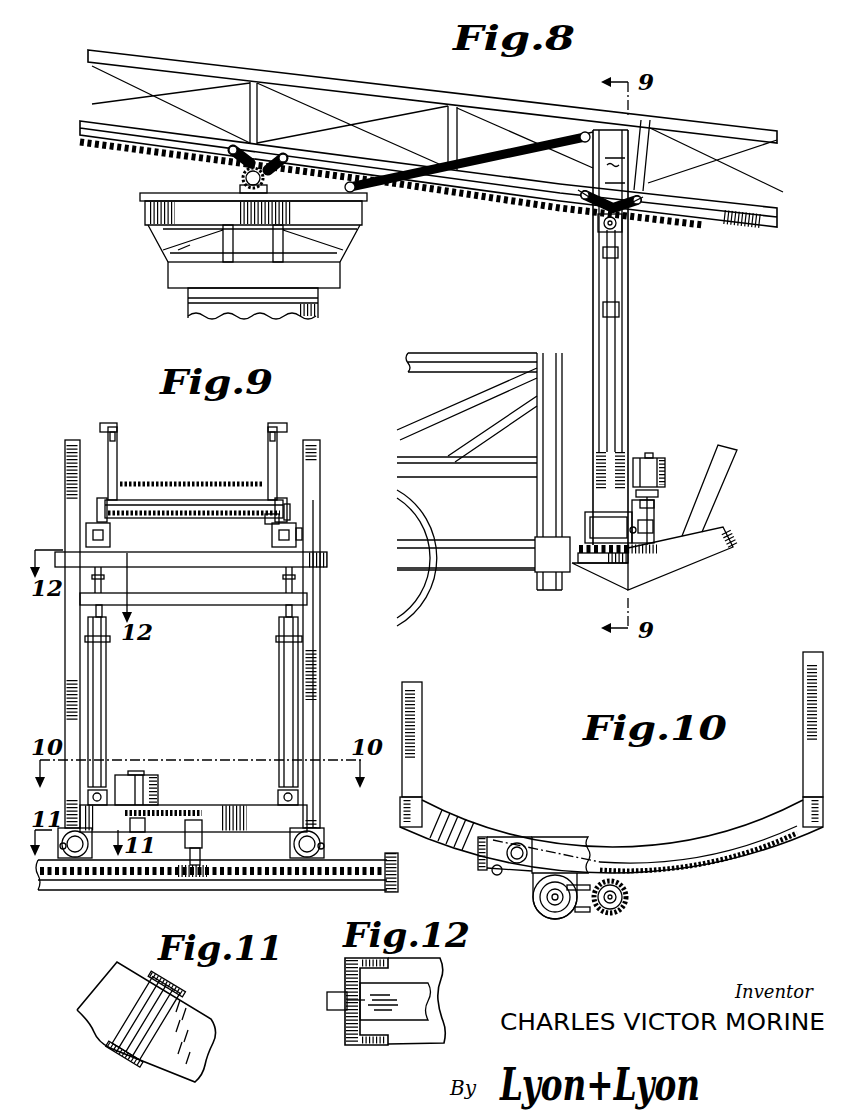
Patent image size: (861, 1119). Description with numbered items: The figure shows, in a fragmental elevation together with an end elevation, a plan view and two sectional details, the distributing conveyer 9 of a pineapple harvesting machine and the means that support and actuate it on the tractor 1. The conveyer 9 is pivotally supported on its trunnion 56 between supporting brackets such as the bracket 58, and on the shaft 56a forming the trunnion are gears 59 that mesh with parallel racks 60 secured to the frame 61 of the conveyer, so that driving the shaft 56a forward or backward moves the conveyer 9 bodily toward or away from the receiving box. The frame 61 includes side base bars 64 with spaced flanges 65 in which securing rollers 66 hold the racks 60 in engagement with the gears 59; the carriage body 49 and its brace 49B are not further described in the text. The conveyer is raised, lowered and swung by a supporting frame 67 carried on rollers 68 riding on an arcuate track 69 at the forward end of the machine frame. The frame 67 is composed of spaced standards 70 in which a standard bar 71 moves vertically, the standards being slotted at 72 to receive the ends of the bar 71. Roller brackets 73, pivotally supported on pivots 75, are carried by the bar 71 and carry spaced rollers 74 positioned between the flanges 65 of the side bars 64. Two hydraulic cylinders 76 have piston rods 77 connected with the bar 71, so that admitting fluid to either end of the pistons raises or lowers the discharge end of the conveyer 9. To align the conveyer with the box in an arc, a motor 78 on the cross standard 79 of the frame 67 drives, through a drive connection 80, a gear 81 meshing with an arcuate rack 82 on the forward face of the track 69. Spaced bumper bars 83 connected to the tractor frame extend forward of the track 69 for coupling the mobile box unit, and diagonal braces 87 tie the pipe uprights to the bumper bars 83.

In FIG. 8, the tractor 1 is at (318, 310).
In FIG. 8, the distributing conveyer 9 is at (538, 104).
In FIG. 9, the distributing conveyer 9 is at (185, 482).
In FIG. 8, the carriage body 49 is at (340, 236).
In FIG. 8, the carriage frame brace 49B is at (178, 250).
In FIG. 8, the trunnion 56 is at (240, 182).
In FIG. 8, the shaft 56a is at (267, 183).
In FIG. 8, the supporting bracket 58 is at (251, 150).
In FIG. 8, the gears 59 is at (257, 194).
In FIG. 8, the racks 60 is at (110, 148).
In FIG. 8, the frame 61 is at (420, 91).
In FIG. 9, the frame 61 is at (118, 449).
In FIG. 8, the side base bars 64 is at (758, 222).
In FIG. 9, the side base bars 64 is at (257, 500).
In FIG. 8, the flanges 65 is at (716, 204).
In FIG. 9, the flanges 65 is at (278, 500).
In FIG. 8, the securing rollers 66 is at (296, 165).
In FIG. 8, the supporting frame 67 is at (631, 344).
In FIG. 9, the supporting frame 67 is at (318, 620).
In FIG. 10, the supporting frame 67 is at (497, 877).
In FIG. 8, the rollers 68 is at (607, 517).
In FIG. 9, the rollers 68 is at (328, 843).
In FIG. 11, the rollers 68 is at (110, 1026).
In FIG. 8, the arcuate track 69 is at (592, 563).
In FIG. 10, the arcuate track 69 is at (452, 830).
In FIG. 11, the arcuate track 69 is at (195, 1018).
In FIG. 8, the standards 70 is at (630, 294).
In FIG. 9, the standards 70 is at (320, 652).
In FIG. 10, the standards 70 is at (486, 838).
In FIG. 12, the standards 70 is at (370, 1046).
In FIG. 9, the standard bar 71 is at (172, 560).
In FIG. 12, the standard bar 71 is at (412, 1012).
In FIG. 12, the slot 72 is at (355, 1007).
In FIG. 8, the roller brackets 73 is at (597, 203).
In FIG. 9, the roller brackets 73 is at (282, 506).
In FIG. 8, the rollers 74 is at (576, 187).
In FIG. 9, the rollers 74 is at (270, 520).
In FIG. 8, the pivots 75 is at (616, 226).
In FIG. 9, the pivots 75 is at (303, 540).
In FIG. 8, the hydraulic cylinders 76 is at (623, 405).
In FIG. 9, the hydraulic cylinders 76 is at (107, 717).
In FIG. 9, the piston rods 77 is at (104, 587).
In FIG. 8, the motor 78 is at (668, 470).
In FIG. 9, the motor 78 is at (158, 792).
In FIG. 10, the motor 78 is at (558, 919).
In FIG. 9, the cross standard 79 is at (249, 805).
In FIG. 8, the drive connection 80 is at (656, 494).
In FIG. 9, the drive connection 80 is at (172, 810).
In FIG. 10, the drive connection 80 is at (583, 913).
In FIG. 8, the gear 81 is at (657, 544).
In FIG. 9, the gear 81 is at (191, 880).
In FIG. 10, the gear 81 is at (630, 905).
In FIG. 8, the arcuate rack 82 is at (613, 562).
In FIG. 9, the arcuate rack 82 is at (352, 874).
In FIG. 10, the arcuate rack 82 is at (692, 873).
In FIG. 8, the bumper bars 83 is at (680, 558).
In FIG. 8, the diagonal braces 87 is at (722, 478).